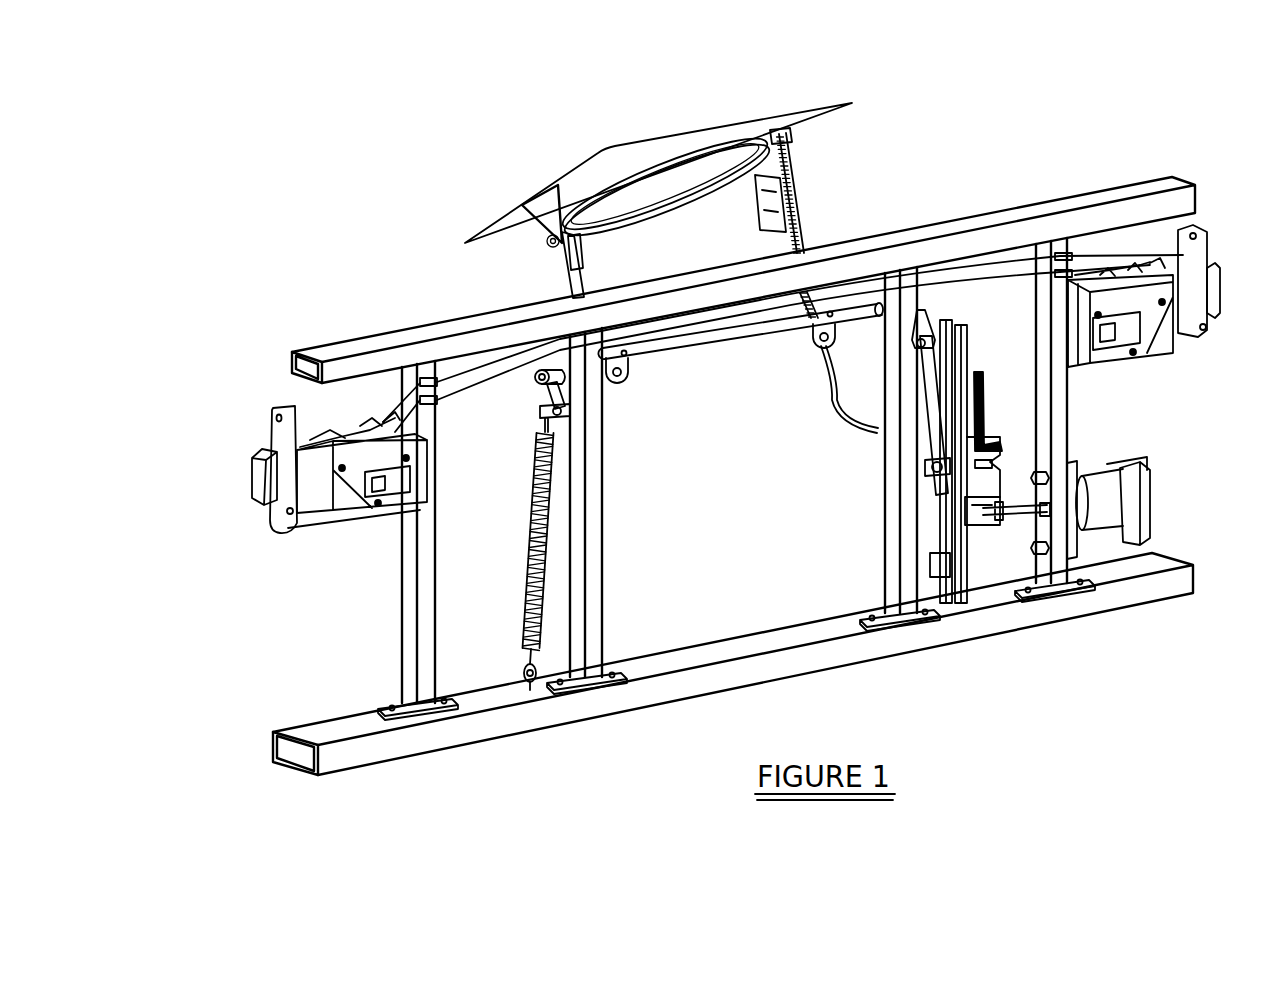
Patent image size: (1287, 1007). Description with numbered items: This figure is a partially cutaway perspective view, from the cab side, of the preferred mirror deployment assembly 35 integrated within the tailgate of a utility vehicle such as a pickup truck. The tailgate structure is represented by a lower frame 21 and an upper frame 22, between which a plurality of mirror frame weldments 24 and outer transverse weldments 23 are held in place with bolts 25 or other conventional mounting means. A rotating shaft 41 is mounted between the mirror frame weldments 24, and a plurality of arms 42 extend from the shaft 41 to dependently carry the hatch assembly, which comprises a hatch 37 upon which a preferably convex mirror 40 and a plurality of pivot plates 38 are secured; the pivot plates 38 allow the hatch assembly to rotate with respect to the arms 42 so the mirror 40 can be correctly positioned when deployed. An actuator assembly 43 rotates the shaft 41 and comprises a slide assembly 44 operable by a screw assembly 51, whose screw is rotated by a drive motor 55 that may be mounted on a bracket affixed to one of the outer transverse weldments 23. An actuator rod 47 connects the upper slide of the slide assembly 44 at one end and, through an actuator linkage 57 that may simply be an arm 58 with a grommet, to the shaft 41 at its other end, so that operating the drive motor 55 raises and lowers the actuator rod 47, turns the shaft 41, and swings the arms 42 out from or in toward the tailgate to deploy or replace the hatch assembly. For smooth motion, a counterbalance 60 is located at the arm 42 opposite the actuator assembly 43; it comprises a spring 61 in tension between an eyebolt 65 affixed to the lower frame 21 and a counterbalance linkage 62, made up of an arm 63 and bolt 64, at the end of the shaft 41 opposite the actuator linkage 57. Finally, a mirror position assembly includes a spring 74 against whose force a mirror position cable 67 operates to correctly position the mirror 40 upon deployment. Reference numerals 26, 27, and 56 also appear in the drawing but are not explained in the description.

The lower frame 21 is at (352, 762).
The upper frame 22 is at (1098, 198).
The outer transverse weldments 23 is at (404, 600).
The mirror frame weldments 24 is at (599, 630).
The bolts 25 is at (618, 686).
The end bracket assemblies 26 is at (291, 549).
The mounting brackets 27 is at (291, 404).
The mirror deployment assembly 35 is at (604, 190).
The hatch 37 is at (800, 120).
The pivot plates 38 is at (546, 205).
The mirror 40 is at (628, 213).
The shaft 41 is at (692, 362).
The arms 42 is at (566, 272).
The actuator assembly 43 is at (1107, 479).
The slide assembly 44 is at (920, 515).
The actuator rod 47 is at (932, 416).
The screw assembly 51 is at (1001, 420).
The drive motor 55 is at (1118, 499).
The drive shaft 56 is at (1120, 537).
The actuator linkage 57 is at (906, 368).
The arm 58 is at (927, 318).
The counterbalance 60 is at (559, 530).
The spring 61 is at (533, 506).
The counterbalance linkage 62 is at (563, 431).
The arm 63 is at (545, 392).
The bolt 64 is at (540, 413).
The eyebolt 65 is at (524, 672).
The mirror position cable 67 is at (825, 372).
The spring 74 is at (803, 238).